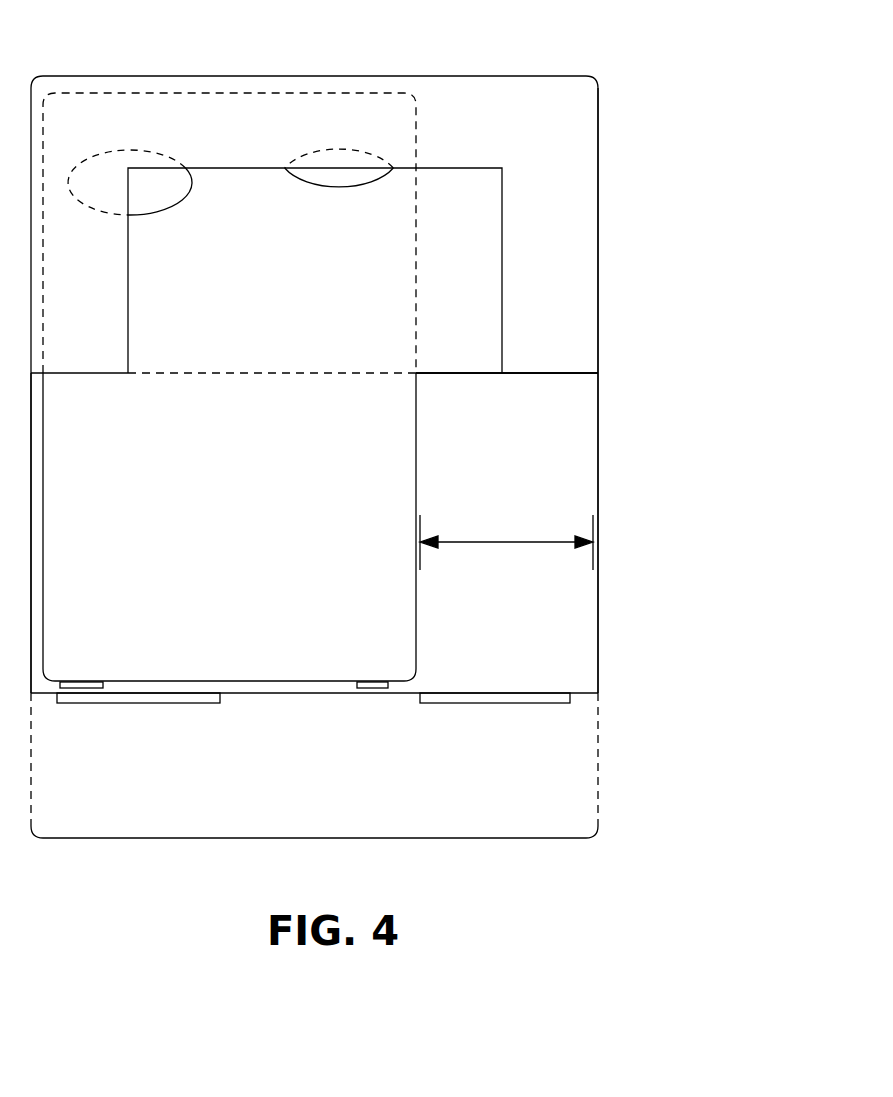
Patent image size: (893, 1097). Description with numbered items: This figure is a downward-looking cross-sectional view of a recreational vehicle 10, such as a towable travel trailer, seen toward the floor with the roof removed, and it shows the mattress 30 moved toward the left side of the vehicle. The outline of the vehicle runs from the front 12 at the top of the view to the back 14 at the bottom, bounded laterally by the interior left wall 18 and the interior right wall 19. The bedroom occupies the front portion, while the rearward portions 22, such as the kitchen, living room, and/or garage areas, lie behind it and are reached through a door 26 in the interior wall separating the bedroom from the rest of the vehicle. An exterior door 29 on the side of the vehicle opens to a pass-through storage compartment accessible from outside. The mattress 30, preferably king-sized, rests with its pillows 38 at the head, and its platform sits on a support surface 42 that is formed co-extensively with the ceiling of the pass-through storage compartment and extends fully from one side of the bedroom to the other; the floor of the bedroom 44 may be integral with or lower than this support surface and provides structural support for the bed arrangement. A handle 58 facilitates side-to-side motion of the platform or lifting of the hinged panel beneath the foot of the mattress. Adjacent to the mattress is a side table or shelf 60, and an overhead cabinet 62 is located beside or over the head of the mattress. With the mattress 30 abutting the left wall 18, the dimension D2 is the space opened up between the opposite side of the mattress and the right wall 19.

The recreational vehicle 10 is at (663, 190).
The front of the RV 12 is at (427, 75).
The back of the RV 14 is at (258, 838).
The interior left wall 18 is at (31, 428).
The interior right wall 19 is at (598, 668).
The rearward portions of the RV 22 is at (311, 750).
The door 26 is at (133, 703).
The exterior door 29 is at (599, 122).
The mattress 30 is at (223, 387).
The pillows 38 is at (148, 190).
The support surface 42 is at (467, 285).
The floor of the bedroom 44 is at (507, 403).
The handle 58 is at (72, 688).
The side table 60 is at (545, 383).
The overhead cabinet 62 is at (543, 245).
The dimension between mattress side and side wall D2 is at (506, 542).